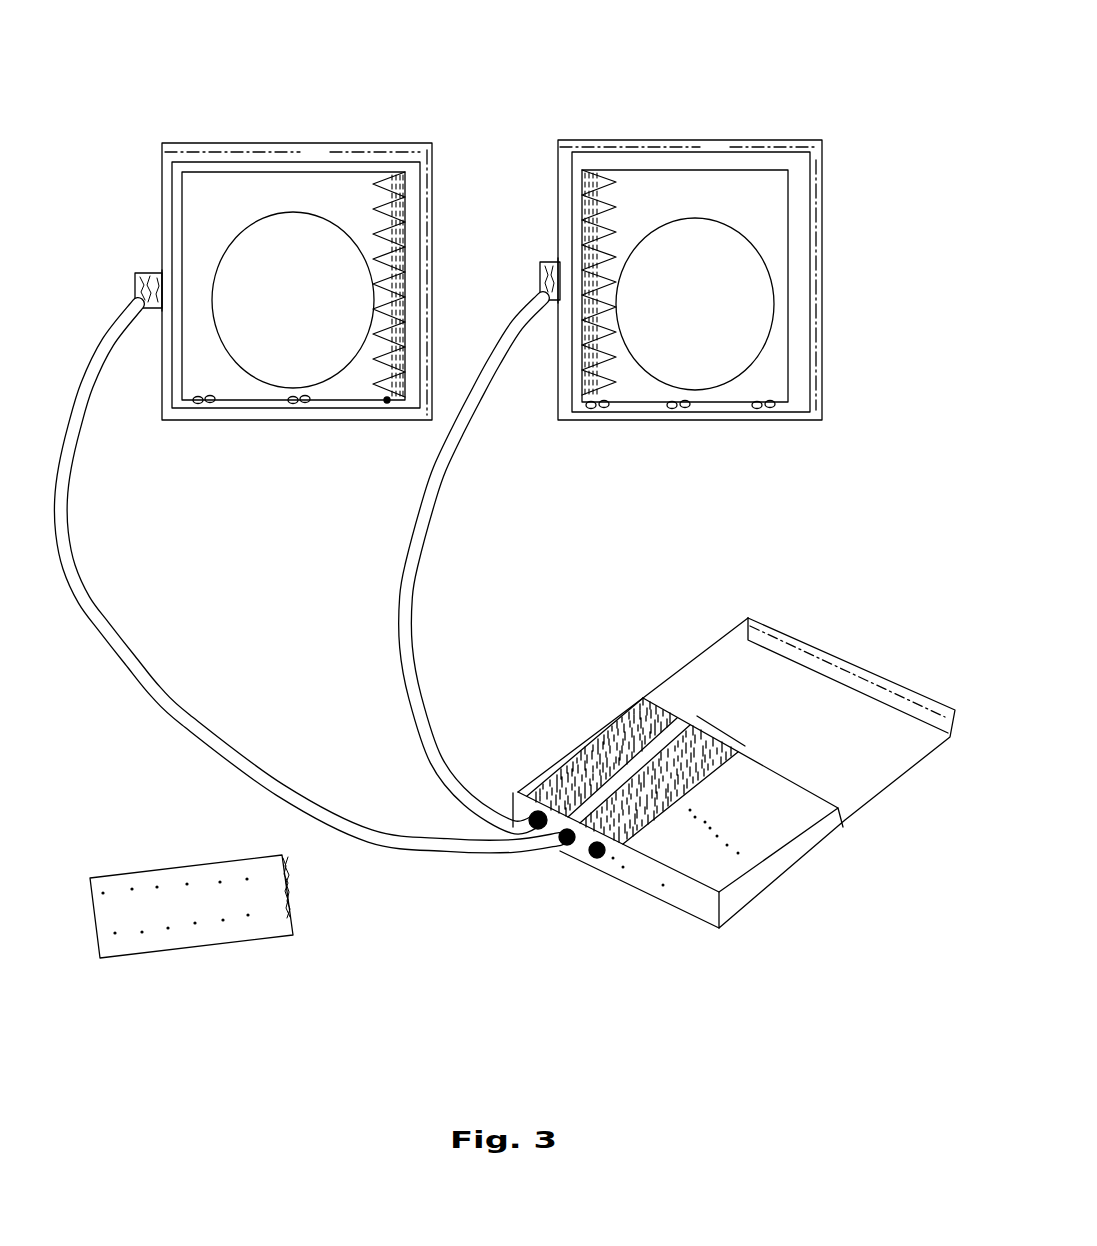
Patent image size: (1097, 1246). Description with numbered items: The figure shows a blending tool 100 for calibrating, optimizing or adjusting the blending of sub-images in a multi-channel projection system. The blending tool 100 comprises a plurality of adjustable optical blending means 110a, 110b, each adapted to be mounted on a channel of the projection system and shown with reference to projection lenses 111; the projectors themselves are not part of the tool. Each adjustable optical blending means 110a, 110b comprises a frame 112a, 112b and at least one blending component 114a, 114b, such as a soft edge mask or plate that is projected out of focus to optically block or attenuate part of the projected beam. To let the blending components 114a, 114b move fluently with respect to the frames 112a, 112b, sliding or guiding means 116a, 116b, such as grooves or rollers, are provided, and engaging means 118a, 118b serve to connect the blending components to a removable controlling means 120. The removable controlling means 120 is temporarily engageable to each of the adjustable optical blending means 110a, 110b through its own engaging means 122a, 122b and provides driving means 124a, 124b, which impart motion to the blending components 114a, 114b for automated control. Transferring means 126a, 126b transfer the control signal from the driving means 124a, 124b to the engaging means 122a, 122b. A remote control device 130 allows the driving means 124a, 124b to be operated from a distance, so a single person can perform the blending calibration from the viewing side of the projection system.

The blending tool 100 is at (800, 83).
The adjustable optical blending means 110a is at (277, 100).
The adjustable optical blending means 110b is at (670, 100).
The projection lens 111 is at (319, 306).
The frame 112a is at (162, 197).
The frame 112b is at (812, 415).
The blending component 114a is at (387, 404).
The blending component 114b is at (593, 362).
The sliding or guiding means 116a is at (294, 408).
The sliding or guiding means 116b is at (690, 415).
The engaging means 118a is at (155, 315).
The engaging means 118b is at (555, 262).
The removable controlling means 120 is at (760, 584).
The engaging means 122a is at (136, 292).
The engaging means 122b is at (537, 304).
The driving means 124a is at (592, 776).
The driving means 124b is at (657, 758).
The transferring means 126a is at (118, 660).
The transferring means 126b is at (422, 513).
The remote control device 130 is at (130, 955).